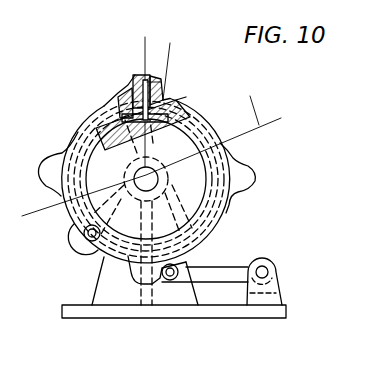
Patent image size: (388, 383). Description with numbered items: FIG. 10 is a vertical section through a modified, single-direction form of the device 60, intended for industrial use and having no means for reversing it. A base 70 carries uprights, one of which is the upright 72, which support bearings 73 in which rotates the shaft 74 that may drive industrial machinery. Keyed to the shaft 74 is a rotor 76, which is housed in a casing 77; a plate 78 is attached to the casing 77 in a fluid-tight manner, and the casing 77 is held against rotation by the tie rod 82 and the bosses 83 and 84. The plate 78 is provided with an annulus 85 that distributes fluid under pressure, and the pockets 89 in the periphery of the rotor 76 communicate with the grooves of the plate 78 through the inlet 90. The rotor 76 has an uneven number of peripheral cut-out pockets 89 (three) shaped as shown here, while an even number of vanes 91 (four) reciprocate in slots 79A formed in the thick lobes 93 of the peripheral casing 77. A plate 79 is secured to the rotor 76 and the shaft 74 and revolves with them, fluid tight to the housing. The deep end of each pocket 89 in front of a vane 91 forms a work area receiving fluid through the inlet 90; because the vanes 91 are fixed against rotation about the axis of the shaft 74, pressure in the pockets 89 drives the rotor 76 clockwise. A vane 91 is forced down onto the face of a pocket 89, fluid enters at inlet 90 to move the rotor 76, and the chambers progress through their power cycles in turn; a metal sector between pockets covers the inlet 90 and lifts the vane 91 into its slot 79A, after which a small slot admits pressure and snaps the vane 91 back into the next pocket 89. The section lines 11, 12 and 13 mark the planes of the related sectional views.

The mounting assembly 60 is at (14, 0).
The section line 11- 11 is at (140, 37).
The section line 12- 12 is at (168, 51).
The section line 13- 13 is at (170, 162).
The base 70 is at (172, 310).
The upright 72 is at (108, 276).
The bearings 73 is at (168, 181).
The shaft 74 is at (151, 171).
The rotor 76 is at (80, 128).
The casing 77 is at (234, 152).
The plate 78 is at (76, 228).
The plate 79 is at (165, 95).
The slots 79A is at (167, 87).
The tie rod 82 is at (244, 258).
The boss 83 is at (168, 279).
The boss 84 is at (276, 291).
The annulus 85 is at (238, 200).
The pockets 89 is at (113, 103).
The inlet 90 is at (187, 98).
The vanes 91 is at (126, 104).
The lobes 93 is at (43, 183).